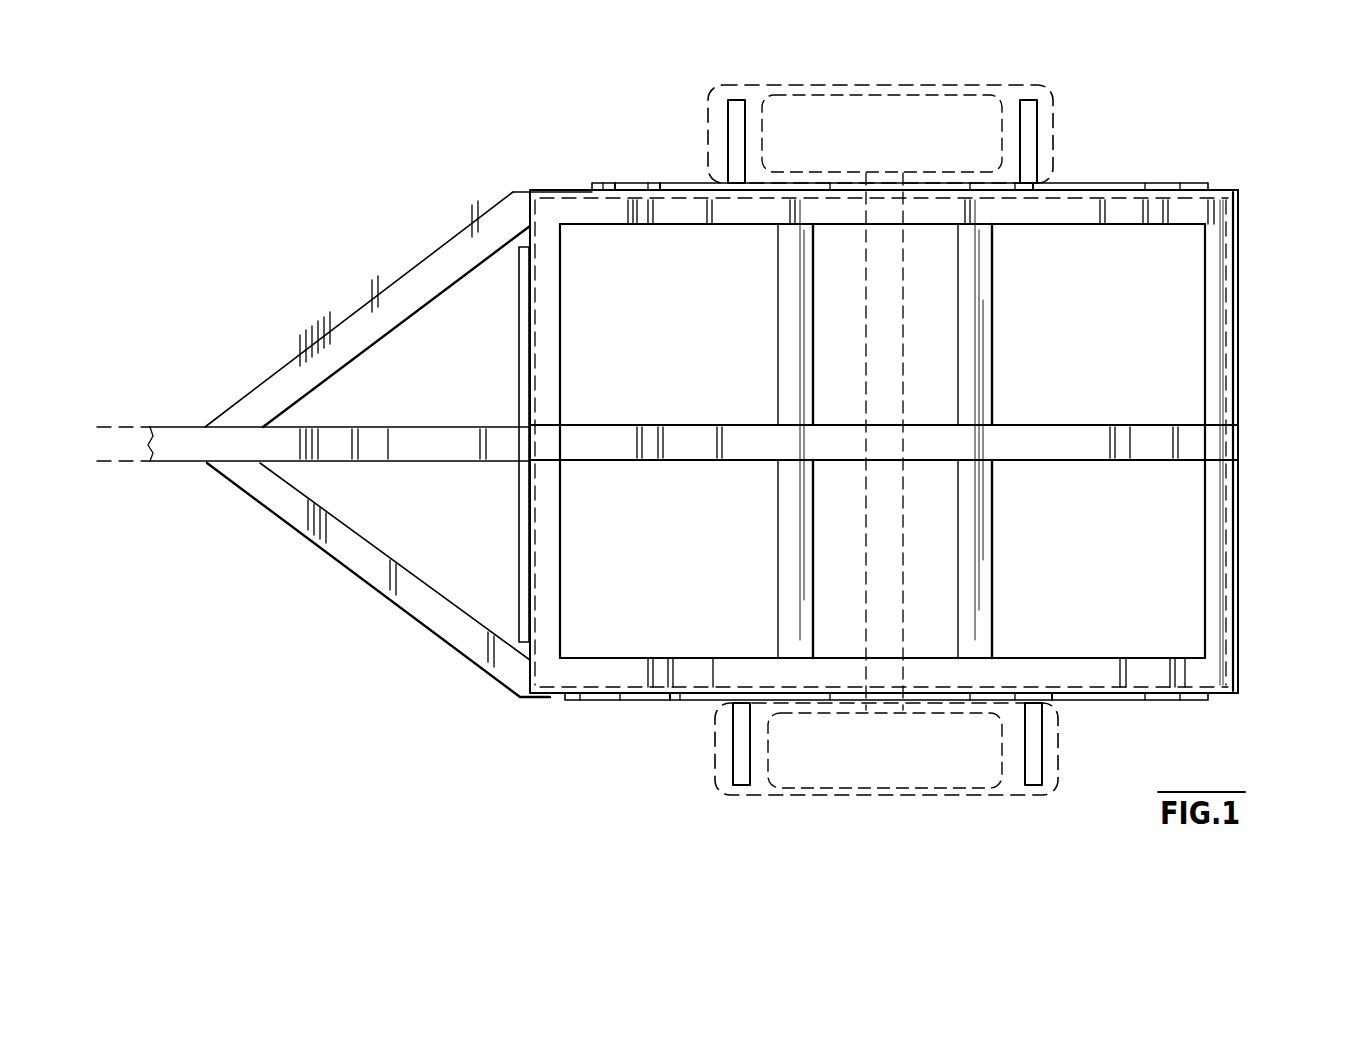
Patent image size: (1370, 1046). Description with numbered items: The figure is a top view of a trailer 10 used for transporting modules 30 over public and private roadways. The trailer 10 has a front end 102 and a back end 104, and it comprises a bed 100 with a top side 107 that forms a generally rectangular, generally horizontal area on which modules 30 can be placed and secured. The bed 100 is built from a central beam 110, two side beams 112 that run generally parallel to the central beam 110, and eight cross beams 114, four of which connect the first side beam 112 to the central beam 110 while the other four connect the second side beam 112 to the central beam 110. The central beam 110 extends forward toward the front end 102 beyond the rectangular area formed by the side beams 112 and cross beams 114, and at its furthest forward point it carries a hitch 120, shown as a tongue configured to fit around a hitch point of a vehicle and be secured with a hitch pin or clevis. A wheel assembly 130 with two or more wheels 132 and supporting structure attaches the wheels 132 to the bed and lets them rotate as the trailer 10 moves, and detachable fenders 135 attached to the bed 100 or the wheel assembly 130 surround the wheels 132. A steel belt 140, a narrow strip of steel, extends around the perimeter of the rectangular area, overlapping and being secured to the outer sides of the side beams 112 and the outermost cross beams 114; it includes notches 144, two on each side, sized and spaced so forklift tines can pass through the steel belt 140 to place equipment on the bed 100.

The trailer 10 is at (378, 175).
The module 30 is at (557, 192).
The bed 100 is at (1083, 180).
The front end 102 is at (363, 305).
The back end 104 is at (1238, 248).
The top side 107 is at (1125, 208).
The central beam 110 is at (1190, 432).
The side beam 112 is at (1180, 208).
The cross beam 114 is at (777, 331).
The hitch 120 is at (245, 437).
The wheel assembly 130 is at (1012, 98).
The wheel 132 is at (1053, 103).
The fender 135 is at (973, 87).
The steel belt 140 is at (617, 183).
The notch 144 is at (685, 183).